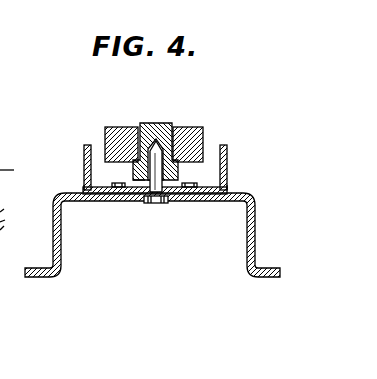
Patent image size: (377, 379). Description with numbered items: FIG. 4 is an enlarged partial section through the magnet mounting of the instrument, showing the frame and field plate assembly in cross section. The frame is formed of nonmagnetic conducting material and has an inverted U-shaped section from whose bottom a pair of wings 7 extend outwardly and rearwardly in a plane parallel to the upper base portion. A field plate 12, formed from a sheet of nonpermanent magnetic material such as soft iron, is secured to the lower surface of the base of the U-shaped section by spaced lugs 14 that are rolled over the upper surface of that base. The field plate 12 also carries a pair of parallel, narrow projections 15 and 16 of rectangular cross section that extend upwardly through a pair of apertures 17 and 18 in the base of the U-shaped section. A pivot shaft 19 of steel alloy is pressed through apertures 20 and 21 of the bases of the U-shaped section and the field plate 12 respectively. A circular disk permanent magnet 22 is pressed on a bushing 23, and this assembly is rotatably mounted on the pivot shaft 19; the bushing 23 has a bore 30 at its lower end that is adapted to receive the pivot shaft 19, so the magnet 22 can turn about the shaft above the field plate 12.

The wing 7 is at (46, 277).
The field plate 12 is at (177, 203).
The lug 14 is at (117, 182).
The projection 15 is at (84, 153).
The projection 16 is at (228, 156).
The aperture 17 is at (84, 190).
The aperture 18 is at (229, 188).
The pivot shaft 19 is at (165, 124).
The aperture 20 is at (156, 198).
The aperture 21 is at (140, 199).
The circular disk permanent magnet 22 is at (198, 127).
The bushing 23 is at (160, 147).
The bore 30 is at (144, 183).